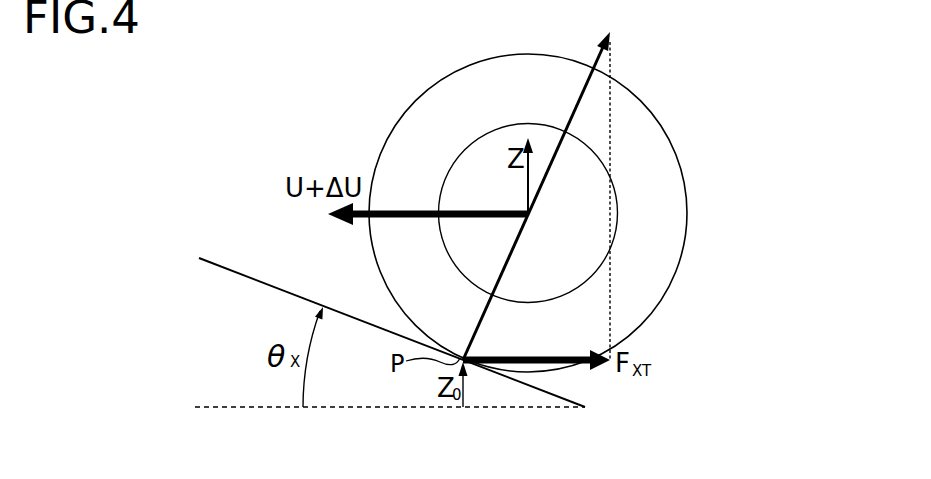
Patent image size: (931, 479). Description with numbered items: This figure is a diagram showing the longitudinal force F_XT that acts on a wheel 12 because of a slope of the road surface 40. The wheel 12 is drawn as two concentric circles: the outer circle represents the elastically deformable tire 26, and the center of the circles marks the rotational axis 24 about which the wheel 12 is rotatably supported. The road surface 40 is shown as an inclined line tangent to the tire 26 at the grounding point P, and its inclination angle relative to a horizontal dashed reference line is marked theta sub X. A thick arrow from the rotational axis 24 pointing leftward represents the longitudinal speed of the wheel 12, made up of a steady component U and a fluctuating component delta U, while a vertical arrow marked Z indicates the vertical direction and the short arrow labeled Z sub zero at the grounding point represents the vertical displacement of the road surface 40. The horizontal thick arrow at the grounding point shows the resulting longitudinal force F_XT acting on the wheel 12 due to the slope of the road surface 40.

The wheel 12 is at (688, 163).
The rotational axis 24 is at (530, 217).
The tire 26 is at (430, 110).
The road surface 40 is at (242, 273).